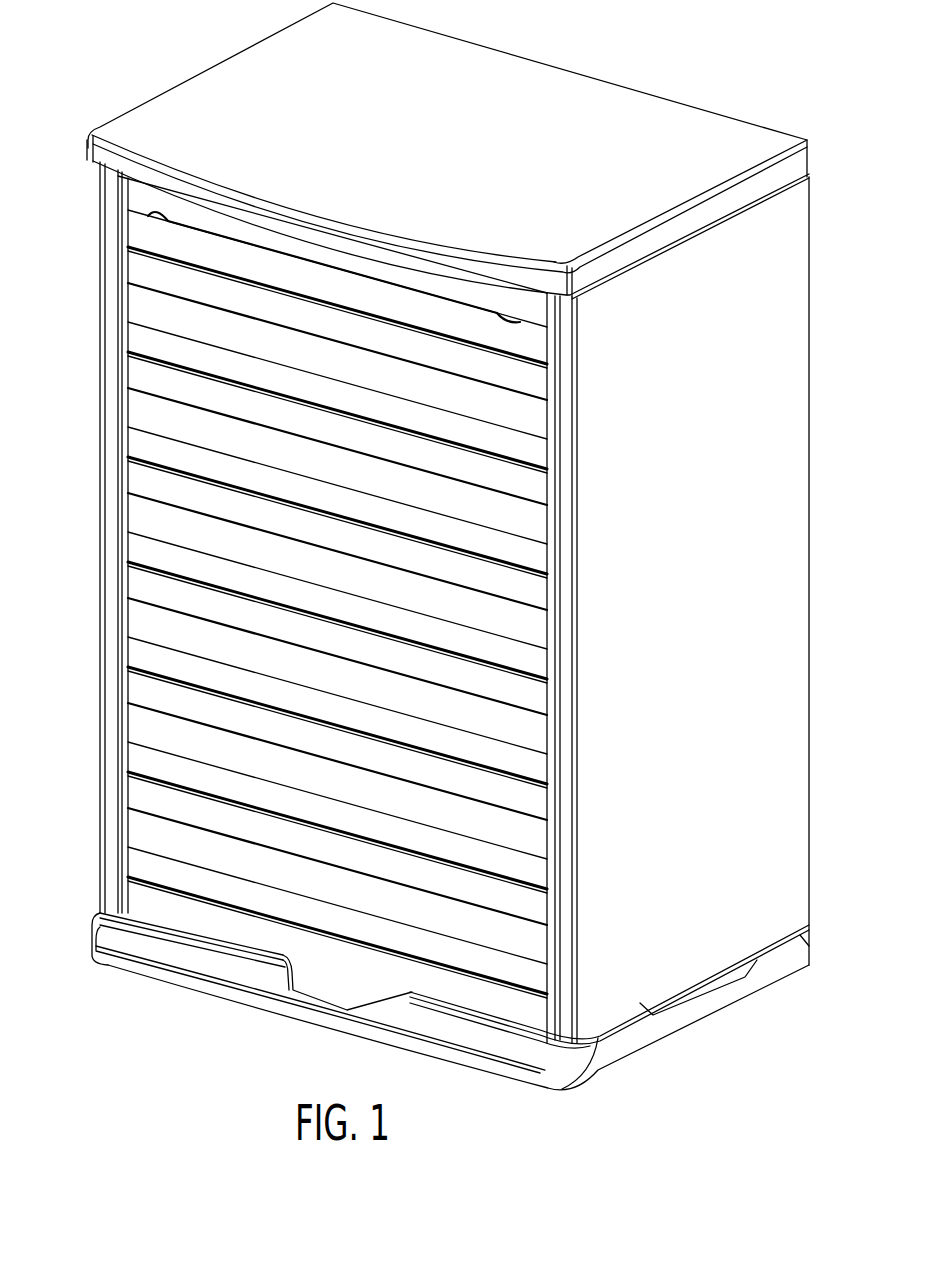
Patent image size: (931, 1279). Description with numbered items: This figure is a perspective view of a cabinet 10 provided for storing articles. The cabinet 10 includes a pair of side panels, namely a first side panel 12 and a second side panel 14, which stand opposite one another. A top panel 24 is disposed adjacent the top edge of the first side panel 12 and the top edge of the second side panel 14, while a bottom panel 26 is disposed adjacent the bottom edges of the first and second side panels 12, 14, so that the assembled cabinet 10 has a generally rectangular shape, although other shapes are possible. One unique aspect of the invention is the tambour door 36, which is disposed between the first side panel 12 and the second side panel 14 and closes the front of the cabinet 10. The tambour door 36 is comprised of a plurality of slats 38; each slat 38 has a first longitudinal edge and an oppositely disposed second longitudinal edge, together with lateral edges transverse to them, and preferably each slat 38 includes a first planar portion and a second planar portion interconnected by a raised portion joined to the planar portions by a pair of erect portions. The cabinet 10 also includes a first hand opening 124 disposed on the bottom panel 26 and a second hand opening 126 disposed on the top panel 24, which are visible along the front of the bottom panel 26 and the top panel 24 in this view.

The cabinet 10 is at (150, 82).
The first side panel 12 is at (113, 602).
The second side panel 14 is at (785, 436).
The top panel 24 is at (440, 133).
The bottom panel 26 is at (442, 1042).
The tambour door 36 is at (173, 388).
The slats 38 is at (334, 366).
The first hand opening 124 is at (318, 982).
The second hand opening 126 is at (248, 240).